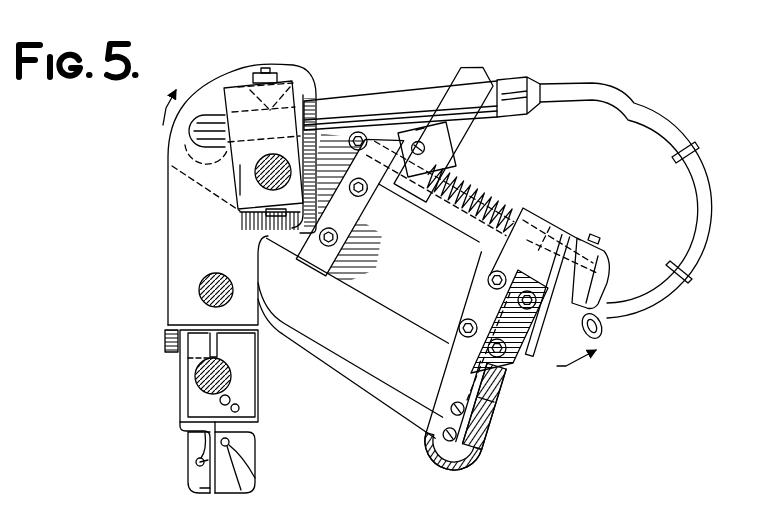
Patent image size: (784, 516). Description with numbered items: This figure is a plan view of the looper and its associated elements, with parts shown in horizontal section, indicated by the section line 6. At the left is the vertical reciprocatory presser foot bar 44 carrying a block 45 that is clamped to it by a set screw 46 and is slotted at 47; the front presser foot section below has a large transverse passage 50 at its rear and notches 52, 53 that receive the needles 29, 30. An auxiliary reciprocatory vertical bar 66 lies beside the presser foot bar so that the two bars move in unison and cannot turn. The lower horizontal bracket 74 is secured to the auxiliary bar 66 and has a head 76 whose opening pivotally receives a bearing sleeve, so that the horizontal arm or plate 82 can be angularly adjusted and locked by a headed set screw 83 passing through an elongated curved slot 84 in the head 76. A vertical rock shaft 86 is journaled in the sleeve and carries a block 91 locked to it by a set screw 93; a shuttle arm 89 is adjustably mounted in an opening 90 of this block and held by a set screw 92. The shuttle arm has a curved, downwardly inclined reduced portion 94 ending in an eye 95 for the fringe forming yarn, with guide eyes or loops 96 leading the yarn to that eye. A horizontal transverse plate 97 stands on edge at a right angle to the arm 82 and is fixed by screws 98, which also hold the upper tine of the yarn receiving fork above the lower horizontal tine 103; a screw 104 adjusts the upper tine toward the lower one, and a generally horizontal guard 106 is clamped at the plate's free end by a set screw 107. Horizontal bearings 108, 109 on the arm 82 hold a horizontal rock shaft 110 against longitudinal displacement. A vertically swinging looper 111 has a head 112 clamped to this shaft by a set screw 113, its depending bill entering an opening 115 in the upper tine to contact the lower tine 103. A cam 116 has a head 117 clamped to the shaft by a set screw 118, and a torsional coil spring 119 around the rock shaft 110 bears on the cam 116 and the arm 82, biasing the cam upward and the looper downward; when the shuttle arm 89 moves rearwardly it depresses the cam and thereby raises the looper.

The section line 6 is at (373, 238).
The needle 29 is at (197, 465).
The needle 30 is at (229, 443).
The presser foot bar 44 is at (231, 377).
The block 45 is at (258, 396).
The set screw 46 is at (170, 354).
The slot 47 is at (217, 355).
The transverse passage 50 is at (243, 431).
The notch 52 is at (196, 461).
The notch 53 is at (256, 473).
The auxiliary reciprocatory vertical bar 66 is at (216, 273).
The lower horizontal bracket 74 is at (170, 270).
The head 76 is at (170, 152).
The arm or plate 82 is at (378, 225).
The headed set screw 83 is at (219, 98).
The elongated curved slot 84 is at (172, 168).
The vertical rock shaft 86 is at (280, 152).
The shuttle arm 89 is at (394, 100).
The opening 90 is at (318, 92).
The block 91 is at (238, 183).
The set screw 92 is at (275, 70).
The set screw 93 is at (278, 242).
The curved reduced portion 94 is at (711, 204).
The eye 95 is at (603, 336).
The guide eyes or loops 96 is at (676, 163).
The horizontal transverse plate 97 is at (503, 395).
The screws 98 is at (549, 318).
The lower horizontal tine 103 is at (477, 460).
The screw 104 is at (455, 403).
The guard 106 is at (358, 362).
The set screw 107 is at (440, 436).
The horizontal bearing 108 is at (370, 222).
The horizontal bearing 109 is at (478, 288).
The horizontal rock shaft 110 is at (504, 214).
The looper 111 is at (508, 378).
The head 112 is at (608, 270).
The set screw 113 is at (596, 243).
The opening 115 is at (484, 428).
The cam 116 is at (470, 136).
The head 117 is at (437, 142).
The set screw 118 is at (424, 126).
The torsional coil spring 119 is at (483, 197).